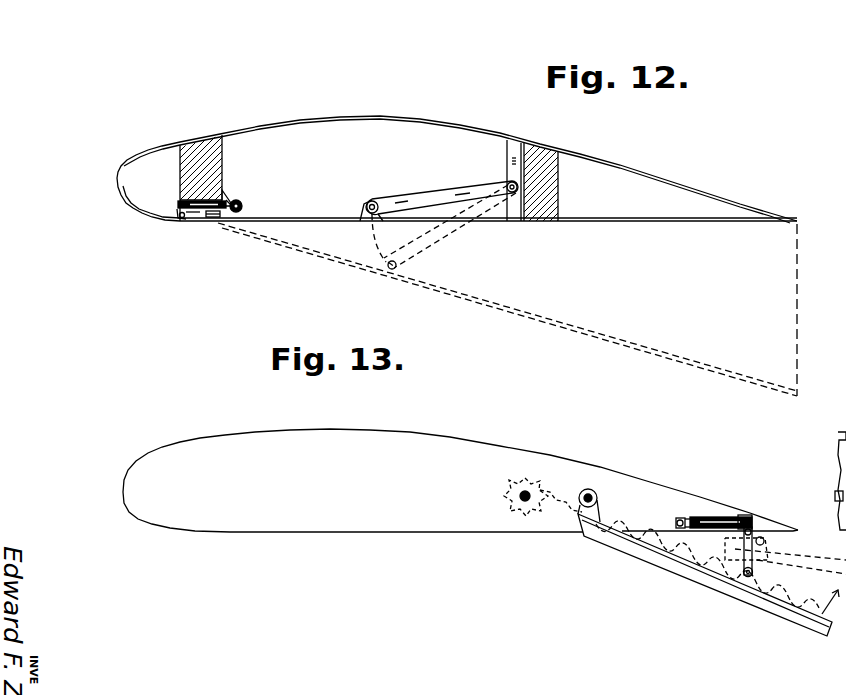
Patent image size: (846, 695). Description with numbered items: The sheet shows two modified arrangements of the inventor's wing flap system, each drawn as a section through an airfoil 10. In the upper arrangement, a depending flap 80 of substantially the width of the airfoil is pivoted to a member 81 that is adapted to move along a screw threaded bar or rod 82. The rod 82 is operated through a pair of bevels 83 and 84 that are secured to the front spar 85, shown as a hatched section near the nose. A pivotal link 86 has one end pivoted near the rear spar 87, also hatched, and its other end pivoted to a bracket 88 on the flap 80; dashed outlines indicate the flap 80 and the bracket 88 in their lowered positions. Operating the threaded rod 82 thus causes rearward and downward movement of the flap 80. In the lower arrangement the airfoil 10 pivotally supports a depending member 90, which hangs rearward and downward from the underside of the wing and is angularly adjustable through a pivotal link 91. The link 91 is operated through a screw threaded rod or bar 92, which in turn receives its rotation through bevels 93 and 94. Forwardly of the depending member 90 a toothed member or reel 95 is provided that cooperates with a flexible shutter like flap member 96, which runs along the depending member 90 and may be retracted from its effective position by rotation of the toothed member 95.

In FIG. 12, the airfoil 10 is at (266, 134).
In FIG. 13, the airfoil 10 is at (381, 451).
In FIG. 12, the depending flap 80 is at (322, 255).
In FIG. 12, the member 81 is at (177, 222).
In FIG. 12, the screw threaded bar or rod 82 is at (205, 222).
In FIG. 12, the bevel 83 is at (232, 199).
In FIG. 12, the bevel 84 is at (243, 203).
In FIG. 12, the front spar 85 is at (197, 152).
In FIG. 12, the pivotal link 86 is at (415, 193).
In FIG. 12, the rear spar 87 is at (538, 190).
In FIG. 12, the bracket 88 is at (382, 272).
In FIG. 13, the depending member 90 is at (668, 556).
In FIG. 13, the pivotal link 91 is at (756, 556).
In FIG. 13, the screw threaded rod or bar 92 is at (720, 518).
In FIG. 13, the bevel 93 is at (681, 518).
In FIG. 13, the bevel 94 is at (686, 522).
In FIG. 13, the toothed member or reel 95 is at (530, 512).
In FIG. 13, the flexible shutter like flap member 96 is at (623, 541).